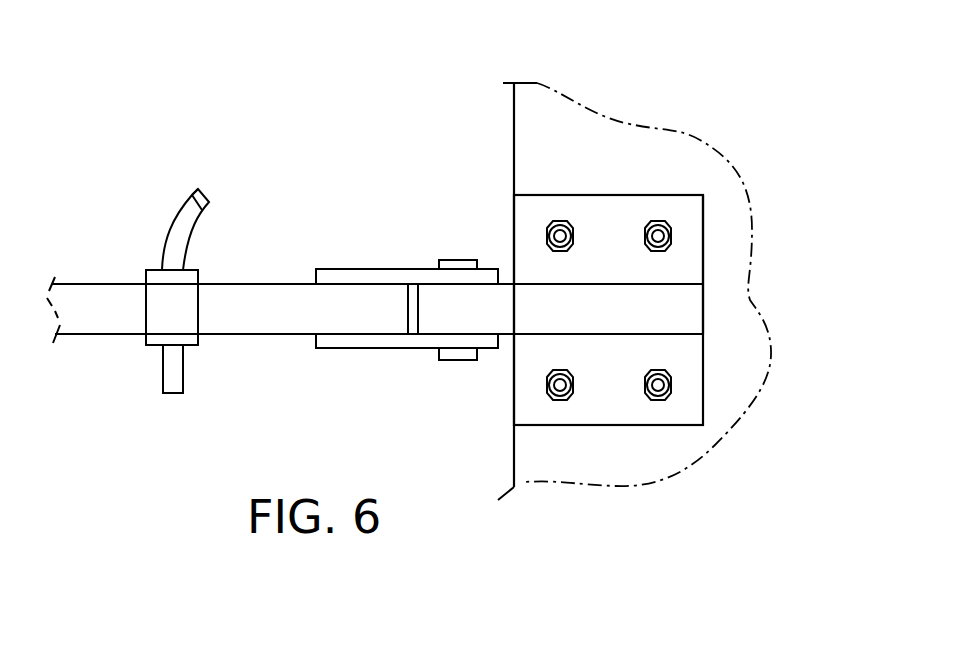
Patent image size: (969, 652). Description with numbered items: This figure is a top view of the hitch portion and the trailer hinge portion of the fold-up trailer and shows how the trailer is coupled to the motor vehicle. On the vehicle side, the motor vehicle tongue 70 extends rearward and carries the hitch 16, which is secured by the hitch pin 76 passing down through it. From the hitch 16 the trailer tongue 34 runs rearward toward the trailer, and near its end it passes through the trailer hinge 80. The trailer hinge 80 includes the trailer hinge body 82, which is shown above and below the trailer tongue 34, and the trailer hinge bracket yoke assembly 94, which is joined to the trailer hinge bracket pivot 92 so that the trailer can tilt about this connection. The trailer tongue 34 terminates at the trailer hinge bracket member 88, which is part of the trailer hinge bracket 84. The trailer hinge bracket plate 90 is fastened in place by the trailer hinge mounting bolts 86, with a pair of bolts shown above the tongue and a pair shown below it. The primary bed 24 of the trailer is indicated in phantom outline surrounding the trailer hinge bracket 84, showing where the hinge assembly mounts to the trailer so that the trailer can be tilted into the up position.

The hitch 16 is at (157, 278).
The primary bed 24 is at (701, 143).
The trailer tongue 34 is at (235, 298).
The motor vehicle tongue 70 is at (97, 319).
The hitch pin 76 is at (193, 198).
The trailer hinge 80 is at (375, 269).
The trailer hinge body 82 is at (370, 346).
The trailer hinge bracket 84 is at (687, 252).
The trailer hinge mounting bolt 86 is at (561, 236).
The trailer hinge bracket member 88 is at (687, 325).
The trailer hinge bracket plate 90 is at (598, 405).
The trailer hinge bracket pivot 92 is at (450, 356).
The trailer hinge bracket yoke assembly 94 is at (425, 272).